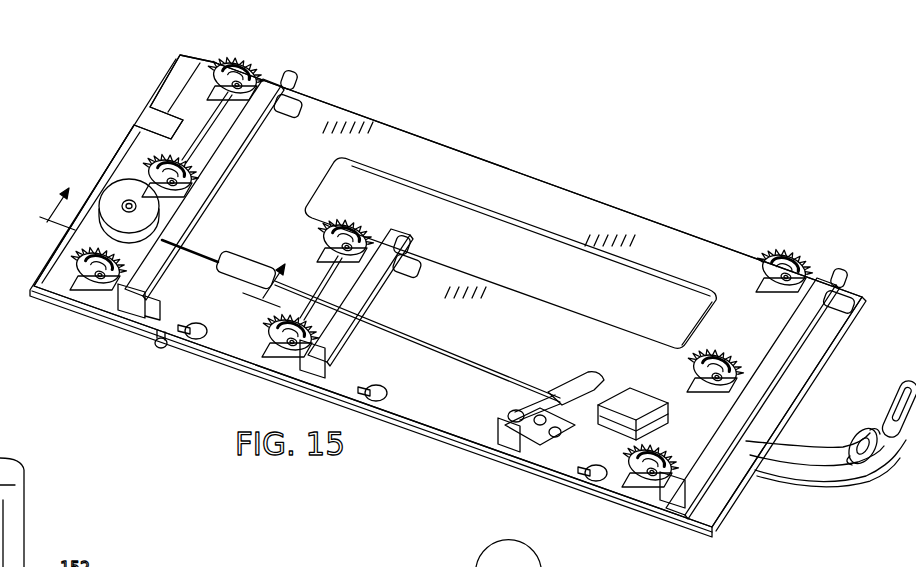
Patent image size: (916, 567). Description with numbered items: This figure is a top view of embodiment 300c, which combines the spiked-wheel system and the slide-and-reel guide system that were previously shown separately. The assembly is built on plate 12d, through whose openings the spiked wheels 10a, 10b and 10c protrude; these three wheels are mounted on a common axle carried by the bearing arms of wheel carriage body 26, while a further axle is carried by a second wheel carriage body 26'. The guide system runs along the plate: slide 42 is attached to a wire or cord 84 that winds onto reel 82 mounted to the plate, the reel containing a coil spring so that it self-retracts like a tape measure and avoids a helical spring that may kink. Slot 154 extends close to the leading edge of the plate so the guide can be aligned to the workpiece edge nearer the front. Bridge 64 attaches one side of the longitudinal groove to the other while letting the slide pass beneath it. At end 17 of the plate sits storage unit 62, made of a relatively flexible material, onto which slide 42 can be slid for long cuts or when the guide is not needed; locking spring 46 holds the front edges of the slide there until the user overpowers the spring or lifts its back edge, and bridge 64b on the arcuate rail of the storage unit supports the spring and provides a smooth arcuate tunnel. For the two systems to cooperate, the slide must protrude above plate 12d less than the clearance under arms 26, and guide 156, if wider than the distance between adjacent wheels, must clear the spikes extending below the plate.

The embodiment 300c is at (568, 135).
The plate 12d is at (402, 134).
The wheel carriage body 26 is at (211, 189).
The wheel carriage body 26' is at (356, 298).
The wheel 10a is at (95, 285).
The wheel 10b is at (165, 160).
The wheel 10c is at (225, 62).
The reel 82 is at (128, 185).
The wire or cord 84 is at (192, 252).
The slide 42 is at (247, 258).
The slot 154 is at (472, 350).
The end of bottom plate 17 is at (175, 233).
The guide 156 is at (162, 348).
The bridge 64 is at (636, 398).
The bridge 64b is at (805, 463).
The storage unit 62 is at (844, 432).
The locking spring 46 is at (878, 440).